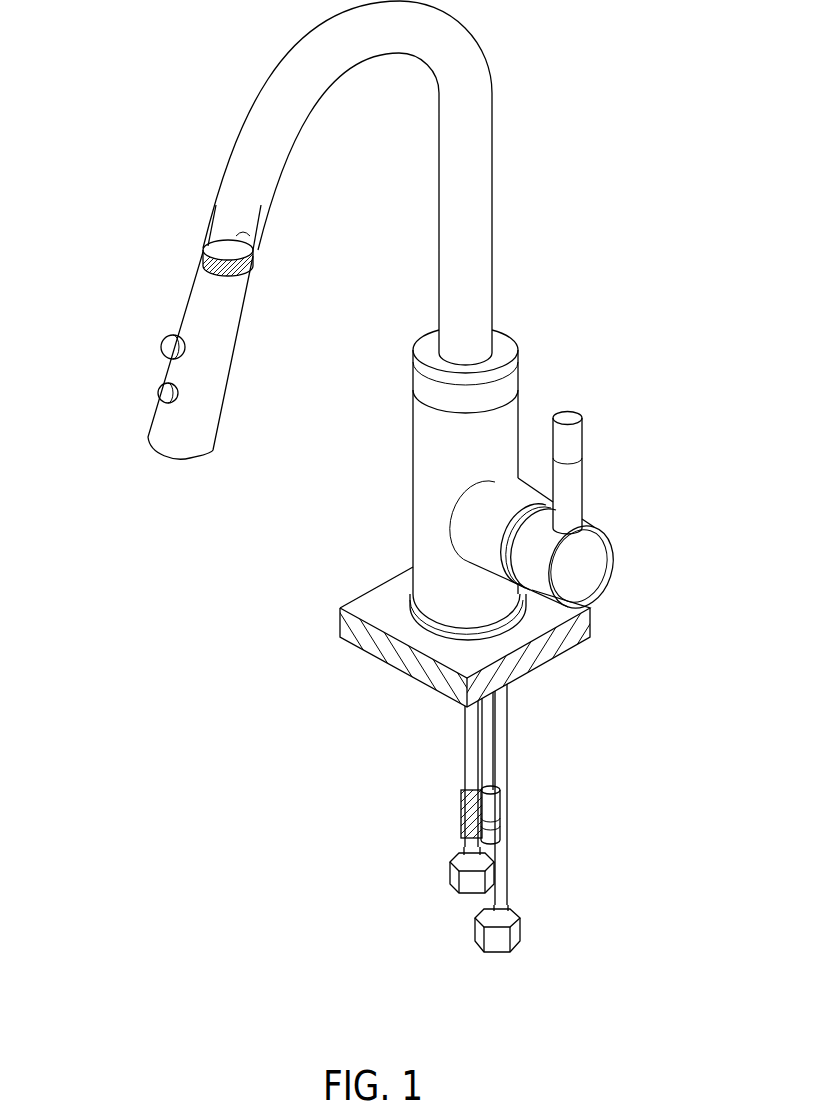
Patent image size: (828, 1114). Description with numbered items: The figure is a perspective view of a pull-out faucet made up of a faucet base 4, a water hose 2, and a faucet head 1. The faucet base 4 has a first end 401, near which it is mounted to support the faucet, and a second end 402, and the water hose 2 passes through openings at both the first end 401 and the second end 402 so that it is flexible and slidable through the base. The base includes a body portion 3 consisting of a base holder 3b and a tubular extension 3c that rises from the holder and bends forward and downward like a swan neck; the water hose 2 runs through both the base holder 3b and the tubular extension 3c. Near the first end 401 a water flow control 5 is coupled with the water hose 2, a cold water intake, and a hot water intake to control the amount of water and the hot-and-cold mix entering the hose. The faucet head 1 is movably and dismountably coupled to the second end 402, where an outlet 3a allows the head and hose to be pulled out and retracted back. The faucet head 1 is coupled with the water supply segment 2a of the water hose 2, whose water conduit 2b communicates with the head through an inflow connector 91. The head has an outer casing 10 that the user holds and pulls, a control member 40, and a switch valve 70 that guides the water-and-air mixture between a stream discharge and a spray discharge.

The faucet head 1 is at (157, 293).
The water hose 2 is at (207, 210).
The water supply segment 2a is at (203, 250).
The water conduit 2b is at (257, 112).
The body portion 3 is at (580, 233).
The outlet 3a is at (228, 281).
The base holder 3b is at (518, 404).
The tubular extension 3c is at (492, 265).
The faucet base 4 is at (518, 137).
The water flow control 5 is at (627, 547).
The outer casing 10 is at (233, 383).
The control member 40 is at (160, 347).
The switch valve 70 is at (160, 396).
The inflow connector 91 is at (243, 231).
The first end 401 is at (517, 624).
The second end 402 is at (252, 270).